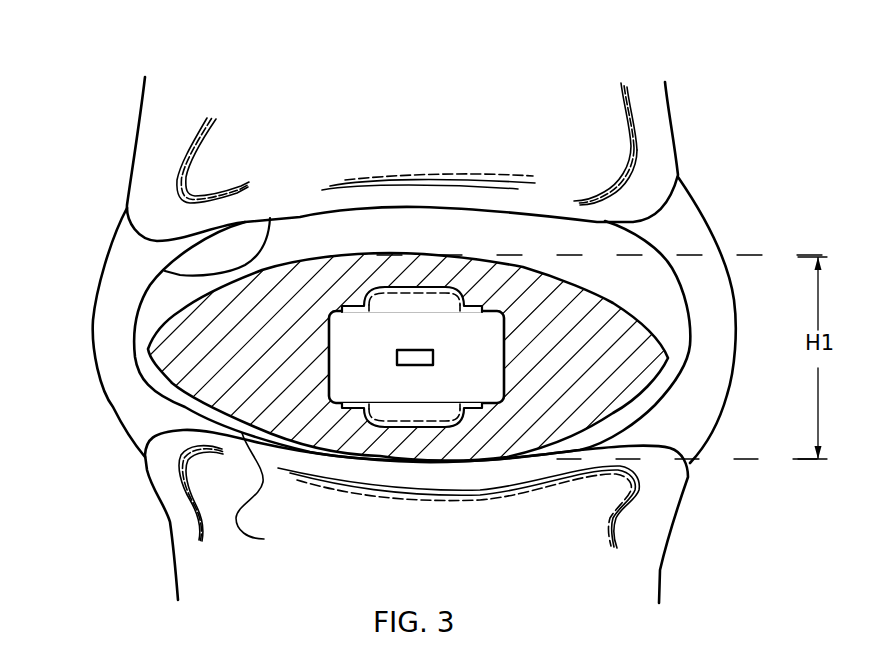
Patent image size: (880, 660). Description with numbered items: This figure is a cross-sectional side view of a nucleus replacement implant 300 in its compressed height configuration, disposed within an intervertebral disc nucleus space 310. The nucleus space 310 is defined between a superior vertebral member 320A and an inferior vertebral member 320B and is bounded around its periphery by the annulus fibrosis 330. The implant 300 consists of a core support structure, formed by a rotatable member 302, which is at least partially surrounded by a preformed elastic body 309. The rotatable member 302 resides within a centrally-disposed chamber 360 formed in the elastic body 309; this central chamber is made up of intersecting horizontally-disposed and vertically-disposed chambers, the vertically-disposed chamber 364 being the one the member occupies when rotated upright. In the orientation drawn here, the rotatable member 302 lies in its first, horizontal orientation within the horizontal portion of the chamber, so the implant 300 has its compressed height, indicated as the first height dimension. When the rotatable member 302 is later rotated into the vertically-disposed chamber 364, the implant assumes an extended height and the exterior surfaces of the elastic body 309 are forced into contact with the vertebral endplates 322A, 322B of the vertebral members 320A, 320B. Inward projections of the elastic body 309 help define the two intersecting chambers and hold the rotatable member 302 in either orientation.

The implant 300 is at (598, 292).
The rotatable member 302 is at (434, 343).
The preformed elastic body 309 is at (617, 327).
The intervertebral disc nucleus space 310 is at (165, 308).
The superior vertebral member 320A is at (451, 113).
The inferior vertebral member 320B is at (451, 561).
The vertebral endplate 322A is at (165, 271).
The vertebral endplate 322B is at (279, 494).
The annulus fibrosis 330 is at (110, 368).
The centrally-disposed chamber 360 is at (423, 295).
The vertically-disposed chamber 364 is at (437, 413).